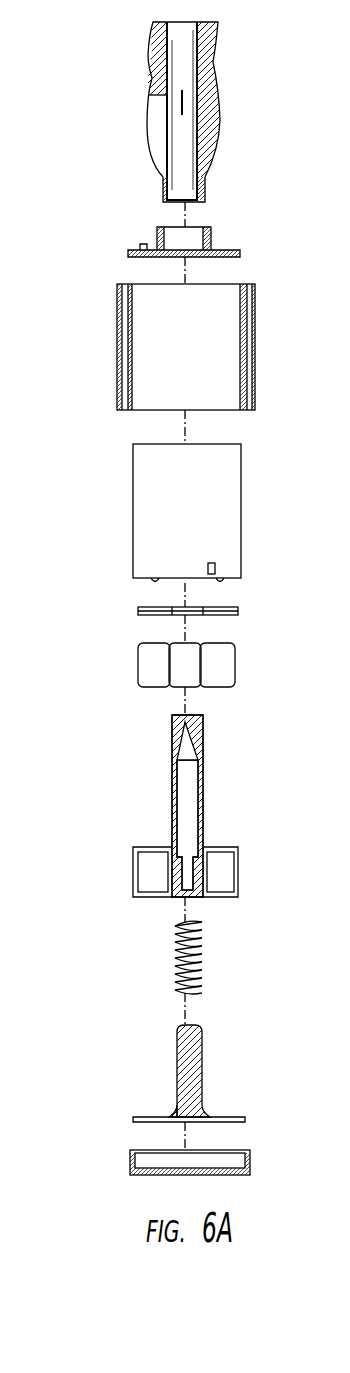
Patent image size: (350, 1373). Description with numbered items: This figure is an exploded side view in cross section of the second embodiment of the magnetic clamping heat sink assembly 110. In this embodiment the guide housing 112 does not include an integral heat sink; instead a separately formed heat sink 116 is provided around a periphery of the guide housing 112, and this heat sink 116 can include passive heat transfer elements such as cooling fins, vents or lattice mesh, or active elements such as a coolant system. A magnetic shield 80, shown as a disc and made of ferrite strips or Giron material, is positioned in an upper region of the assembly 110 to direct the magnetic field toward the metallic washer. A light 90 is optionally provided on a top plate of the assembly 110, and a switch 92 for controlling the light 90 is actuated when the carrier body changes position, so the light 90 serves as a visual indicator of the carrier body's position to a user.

The magnetic clamping heat sink assembly 110 is at (105, 197).
The light 90 is at (158, 249).
The heat sink 116 is at (136, 327).
The guide housing 112 is at (153, 495).
The switch 92 is at (216, 568).
The magnetic shield 80 is at (136, 610).